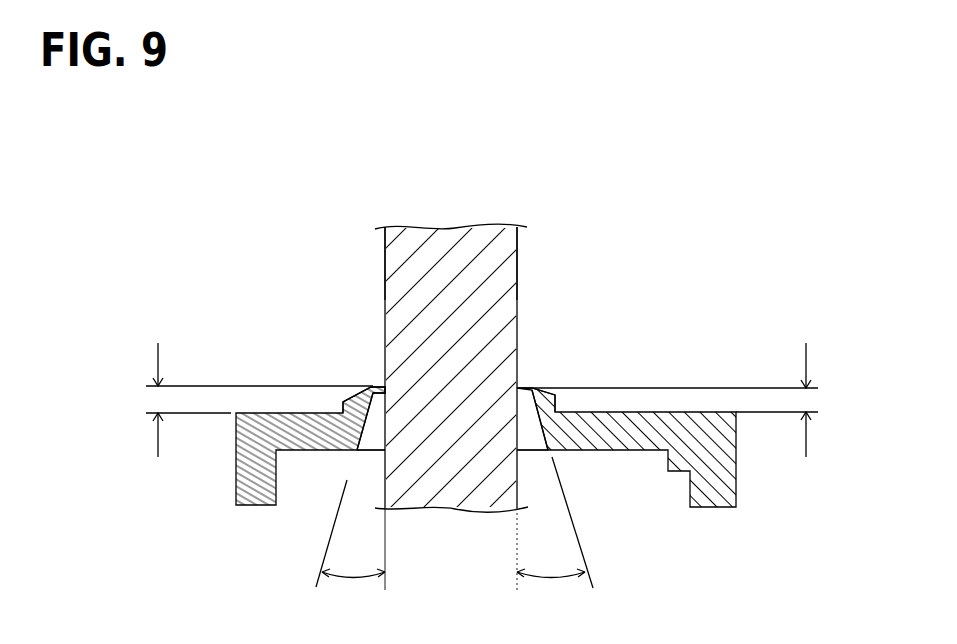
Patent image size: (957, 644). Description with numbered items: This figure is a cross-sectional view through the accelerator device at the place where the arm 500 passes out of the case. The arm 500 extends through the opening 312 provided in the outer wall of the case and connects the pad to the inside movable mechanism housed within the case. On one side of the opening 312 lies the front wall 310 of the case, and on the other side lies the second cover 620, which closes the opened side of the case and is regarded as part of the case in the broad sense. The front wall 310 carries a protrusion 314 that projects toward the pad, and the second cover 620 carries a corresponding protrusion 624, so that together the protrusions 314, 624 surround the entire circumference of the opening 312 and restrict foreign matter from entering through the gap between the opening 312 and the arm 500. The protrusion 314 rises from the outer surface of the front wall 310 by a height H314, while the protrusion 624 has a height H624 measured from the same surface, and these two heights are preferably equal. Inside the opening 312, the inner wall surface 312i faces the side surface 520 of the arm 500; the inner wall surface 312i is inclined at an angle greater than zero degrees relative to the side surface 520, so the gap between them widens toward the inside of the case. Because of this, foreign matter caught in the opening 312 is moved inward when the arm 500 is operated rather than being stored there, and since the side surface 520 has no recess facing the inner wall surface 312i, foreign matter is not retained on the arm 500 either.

The arm 500 is at (447, 247).
The side surface of the arm 520 is at (383, 268).
The front wall 310 is at (283, 437).
The protrusion 314 is at (358, 403).
The opening 312 is at (527, 465).
The inner wall surface 312i is at (357, 450).
The second cover 620 is at (718, 494).
The protrusion 624 is at (540, 388).
The height of protrusion 314 H314 is at (227, 400).
The height of protrusion 624 H624 is at (698, 400).